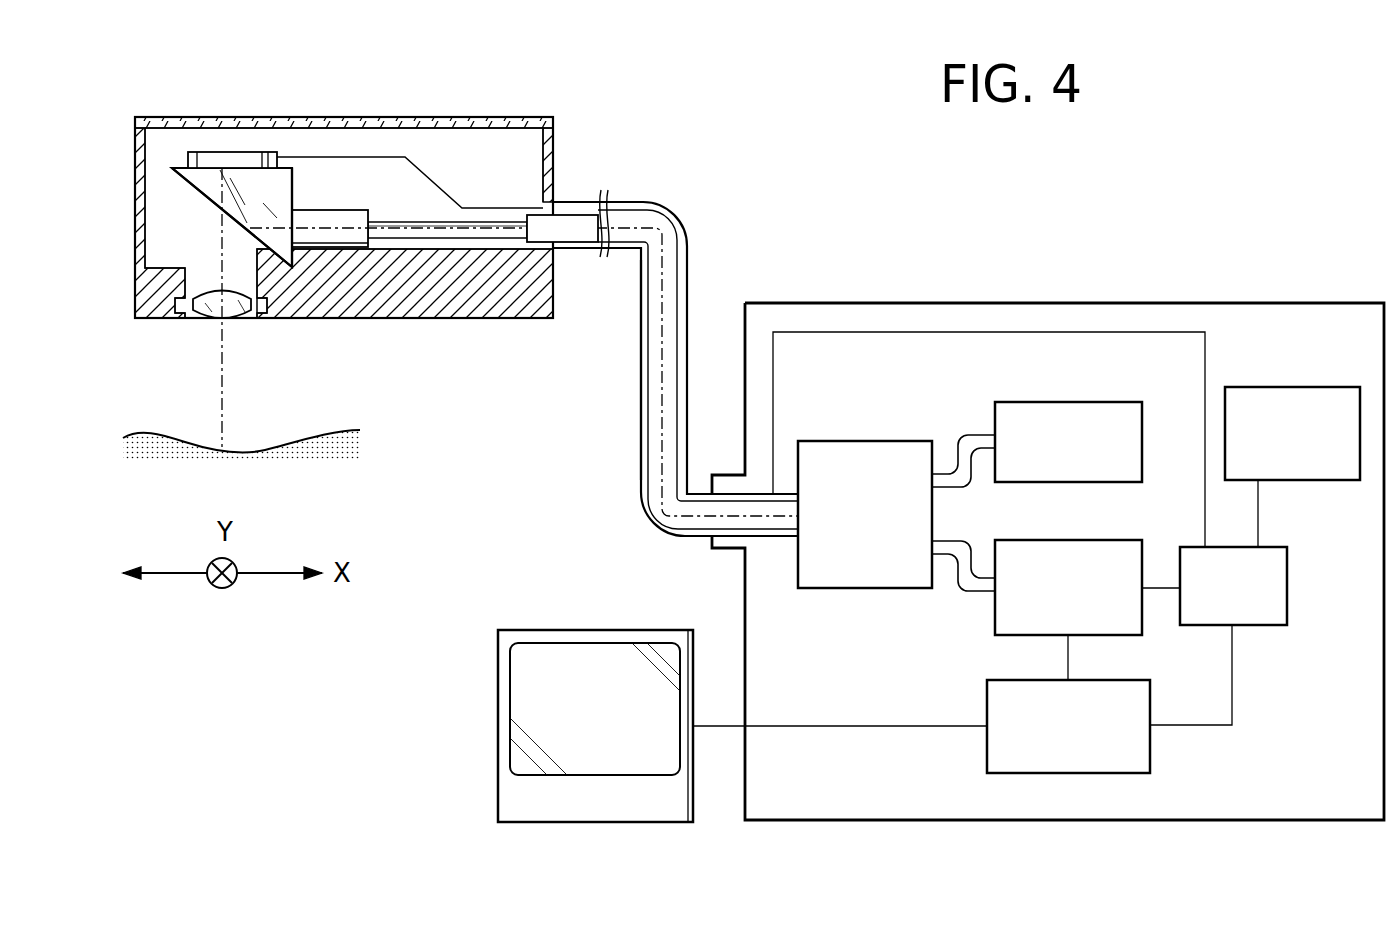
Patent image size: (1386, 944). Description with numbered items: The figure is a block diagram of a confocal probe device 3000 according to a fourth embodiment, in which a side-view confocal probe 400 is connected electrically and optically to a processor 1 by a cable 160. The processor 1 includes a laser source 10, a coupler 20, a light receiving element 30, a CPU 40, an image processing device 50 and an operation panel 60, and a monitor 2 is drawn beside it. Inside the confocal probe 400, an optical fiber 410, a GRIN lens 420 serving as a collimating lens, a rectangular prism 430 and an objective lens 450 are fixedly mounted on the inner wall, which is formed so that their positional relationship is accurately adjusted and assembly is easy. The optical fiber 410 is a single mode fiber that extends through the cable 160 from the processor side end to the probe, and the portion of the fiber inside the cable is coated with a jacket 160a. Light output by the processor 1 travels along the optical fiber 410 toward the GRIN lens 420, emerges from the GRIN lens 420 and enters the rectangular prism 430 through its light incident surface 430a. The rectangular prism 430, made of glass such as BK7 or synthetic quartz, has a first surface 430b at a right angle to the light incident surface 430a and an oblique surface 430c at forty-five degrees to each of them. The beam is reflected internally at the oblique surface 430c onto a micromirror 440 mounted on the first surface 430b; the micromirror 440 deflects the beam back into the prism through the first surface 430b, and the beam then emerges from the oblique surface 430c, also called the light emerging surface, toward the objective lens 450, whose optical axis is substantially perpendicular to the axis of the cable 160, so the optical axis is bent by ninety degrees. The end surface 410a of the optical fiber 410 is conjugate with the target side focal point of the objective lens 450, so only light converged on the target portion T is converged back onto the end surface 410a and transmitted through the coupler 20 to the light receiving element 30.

The processor 1 is at (993, 303).
The monitor 2 is at (580, 630).
The laser source 10 is at (1093, 402).
The coupler 20 is at (890, 441).
The light receiving element 30 is at (1088, 540).
The CPU 40 is at (1287, 587).
The image processing device 50 is at (987, 705).
The operation panel 60 is at (1322, 387).
The cable 160 is at (643, 202).
The jacket 160a is at (641, 442).
The confocal probe 400 is at (482, 117).
The optical fiber 410 is at (500, 249).
The end surface 410a is at (368, 210).
The GRIN lens 420 is at (340, 248).
The rectangular prism 430 is at (193, 185).
The light incident surface 430a is at (300, 240).
The first surface 430b is at (184, 166).
The oblique surface 430c is at (210, 199).
The micromirror 440 is at (247, 157).
The objective lens 450 is at (196, 308).
The confocal probe device 3000 is at (317, 680).
The target portion T is at (140, 434).